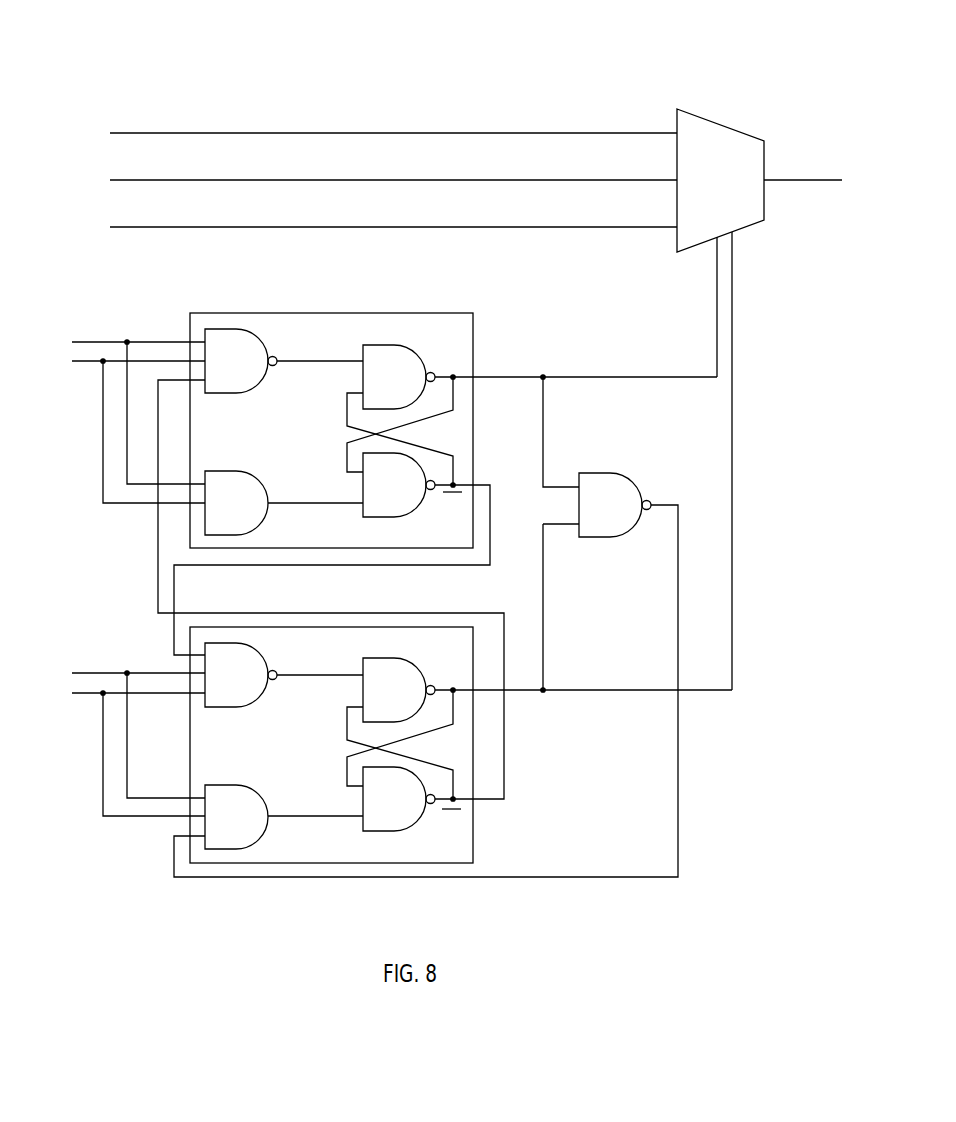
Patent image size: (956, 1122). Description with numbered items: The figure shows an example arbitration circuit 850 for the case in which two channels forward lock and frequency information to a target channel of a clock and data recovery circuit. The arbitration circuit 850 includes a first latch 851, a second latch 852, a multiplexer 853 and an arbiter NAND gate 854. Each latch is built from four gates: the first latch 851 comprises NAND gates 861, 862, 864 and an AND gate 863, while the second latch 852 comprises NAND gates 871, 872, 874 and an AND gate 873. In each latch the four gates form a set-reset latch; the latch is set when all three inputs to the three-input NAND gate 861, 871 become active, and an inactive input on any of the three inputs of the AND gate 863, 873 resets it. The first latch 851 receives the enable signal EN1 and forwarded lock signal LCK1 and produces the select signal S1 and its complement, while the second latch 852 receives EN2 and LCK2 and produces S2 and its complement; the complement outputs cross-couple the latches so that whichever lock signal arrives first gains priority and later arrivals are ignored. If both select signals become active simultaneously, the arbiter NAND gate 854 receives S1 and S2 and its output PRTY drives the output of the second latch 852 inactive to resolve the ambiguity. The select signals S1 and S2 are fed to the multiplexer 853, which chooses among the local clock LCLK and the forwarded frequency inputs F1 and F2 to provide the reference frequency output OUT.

The arbitration circuit 850 is at (416, 59).
The first latch 851 is at (393, 313).
The second latch 852 is at (473, 847).
The multiplexer 853 is at (718, 123).
The arbiter NAND gate 854 is at (620, 516).
The NAND gate 861 is at (248, 370).
The NAND gate 862 is at (406, 388).
The AND gate 863 is at (248, 512).
The NAND gate 864 is at (406, 496).
The NAND gate 871 is at (248, 684).
The NAND gate 872 is at (406, 702).
The AND gate 873 is at (248, 826).
The NAND gate 874 is at (406, 810).